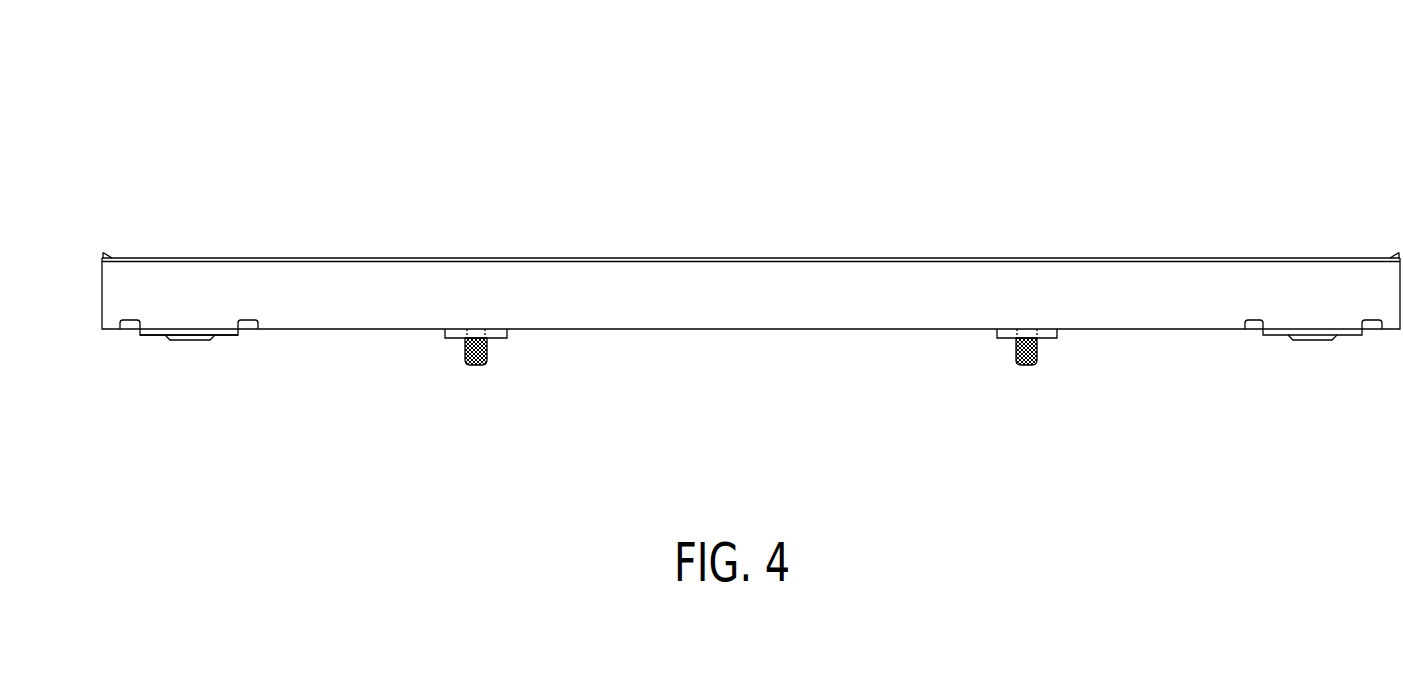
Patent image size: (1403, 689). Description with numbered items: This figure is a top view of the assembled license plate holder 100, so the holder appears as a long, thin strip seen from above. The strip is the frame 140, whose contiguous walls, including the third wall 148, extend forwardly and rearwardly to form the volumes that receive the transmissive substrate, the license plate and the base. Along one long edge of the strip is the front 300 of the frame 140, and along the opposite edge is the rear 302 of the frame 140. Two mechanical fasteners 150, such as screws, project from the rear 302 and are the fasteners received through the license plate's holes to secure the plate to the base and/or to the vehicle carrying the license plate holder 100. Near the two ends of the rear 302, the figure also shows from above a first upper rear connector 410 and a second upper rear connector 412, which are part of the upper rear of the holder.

The license plate holder 100 is at (751, 252).
The frame 140 is at (441, 286).
The third wall 148 is at (1090, 285).
The mechanical fasteners 150 is at (468, 366).
The front 300 is at (895, 257).
The rear 302 is at (777, 331).
The first upper rear connector 410 is at (152, 336).
The second upper rear connector 412 is at (1320, 340).